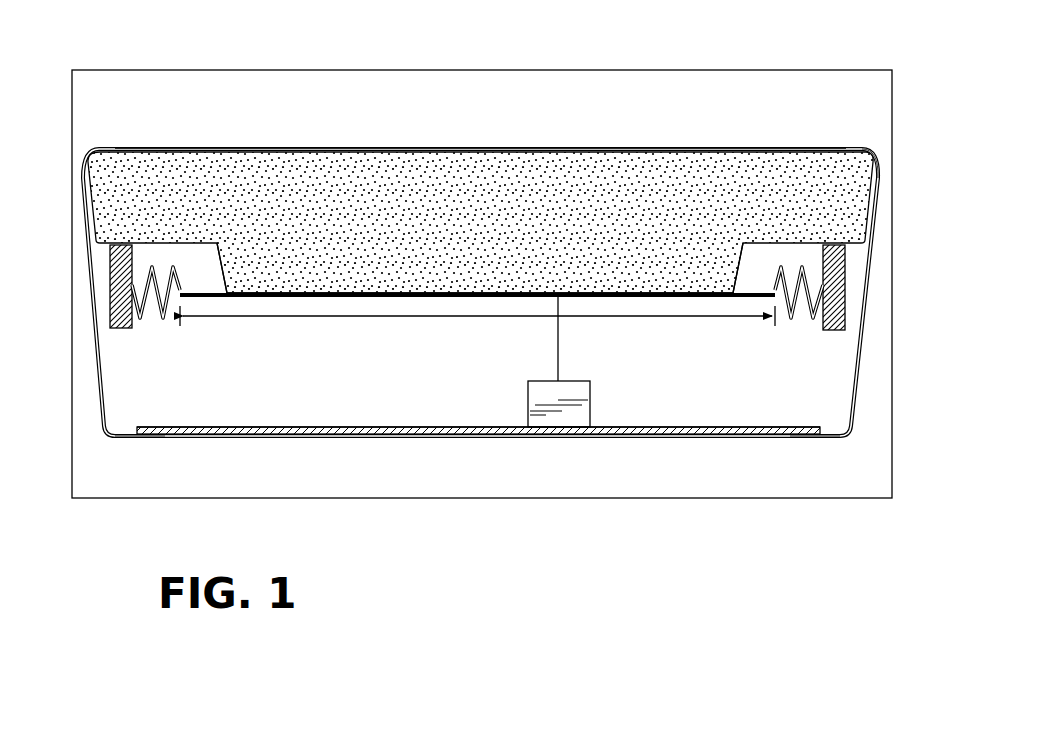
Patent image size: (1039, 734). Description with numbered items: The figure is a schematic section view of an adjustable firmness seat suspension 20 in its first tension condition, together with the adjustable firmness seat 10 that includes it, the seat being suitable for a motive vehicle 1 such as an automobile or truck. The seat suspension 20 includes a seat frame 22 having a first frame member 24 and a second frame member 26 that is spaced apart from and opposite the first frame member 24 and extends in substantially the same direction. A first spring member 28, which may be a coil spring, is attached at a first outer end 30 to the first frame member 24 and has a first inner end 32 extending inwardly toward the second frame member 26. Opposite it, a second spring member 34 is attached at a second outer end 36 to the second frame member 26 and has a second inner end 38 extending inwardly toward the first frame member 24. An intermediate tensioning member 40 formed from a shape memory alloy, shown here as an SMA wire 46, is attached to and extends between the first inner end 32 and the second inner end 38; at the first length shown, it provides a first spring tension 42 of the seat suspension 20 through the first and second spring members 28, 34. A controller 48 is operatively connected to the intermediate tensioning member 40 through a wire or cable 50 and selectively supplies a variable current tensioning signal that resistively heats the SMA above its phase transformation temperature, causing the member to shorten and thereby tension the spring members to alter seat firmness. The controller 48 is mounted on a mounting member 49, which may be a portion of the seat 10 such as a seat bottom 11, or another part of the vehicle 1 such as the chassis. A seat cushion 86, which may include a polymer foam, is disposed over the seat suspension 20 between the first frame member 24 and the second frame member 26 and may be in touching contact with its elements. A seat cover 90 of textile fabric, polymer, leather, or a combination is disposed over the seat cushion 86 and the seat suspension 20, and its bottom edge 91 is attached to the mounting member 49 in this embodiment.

The motive vehicle 1 is at (786, 66).
The adjustable firmness seat 10 is at (717, 134).
The seat bottom 11 is at (405, 422).
The adjustable firmness seat suspension 20 is at (106, 312).
The seat frame 22 is at (121, 330).
The first frame member 24 is at (112, 262).
The second frame member 26 is at (838, 308).
The first spring member 28 is at (160, 322).
The first outer end 30 is at (112, 282).
The first inner end 32 is at (182, 286).
The second spring member 34 is at (793, 322).
The second outer end 36 is at (837, 270).
The second inner end 38 is at (775, 290).
The intermediate tensioning member 40 is at (447, 290).
The first spring tension 42 is at (477, 348).
The SMA wire 46 is at (520, 292).
The controller 48 is at (592, 405).
The mounting member 49 is at (223, 427).
The wire or cable 50 is at (560, 338).
The seat cushion 86 is at (797, 170).
The seat cover 90 is at (871, 160).
The bottom edge 91 is at (150, 440).